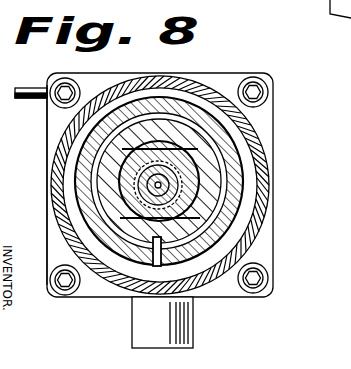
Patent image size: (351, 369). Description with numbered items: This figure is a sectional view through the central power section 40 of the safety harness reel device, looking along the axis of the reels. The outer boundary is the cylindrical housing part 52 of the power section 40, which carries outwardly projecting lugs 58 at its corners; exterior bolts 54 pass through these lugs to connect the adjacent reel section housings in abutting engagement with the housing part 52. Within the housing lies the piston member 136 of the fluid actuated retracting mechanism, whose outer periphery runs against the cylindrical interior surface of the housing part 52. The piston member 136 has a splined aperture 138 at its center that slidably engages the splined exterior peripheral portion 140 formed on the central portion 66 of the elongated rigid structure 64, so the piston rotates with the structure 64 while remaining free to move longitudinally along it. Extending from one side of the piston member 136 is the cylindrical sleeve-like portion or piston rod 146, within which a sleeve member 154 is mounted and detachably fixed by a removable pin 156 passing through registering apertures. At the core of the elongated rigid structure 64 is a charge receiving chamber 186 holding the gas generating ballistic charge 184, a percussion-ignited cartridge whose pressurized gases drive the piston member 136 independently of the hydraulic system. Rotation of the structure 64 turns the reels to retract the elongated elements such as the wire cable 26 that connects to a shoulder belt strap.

The elongated element 26 is at (30, 88).
The central power section 40 is at (183, 77).
The cylindrical housing part 52 is at (100, 185).
The exterior bolts 54 is at (262, 92).
The outwardly projecting lug 58 is at (46, 119).
The elongated rigid structure 64 is at (210, 168).
The central portion 66 is at (242, 205).
The piston member 136 is at (230, 242).
The splined aperture 138 is at (122, 150).
The splined exterior peripheral portion 140 is at (198, 178).
The cylindrical sleeve-like portion or piston rod 146 is at (220, 134).
The sleeve member 154 is at (113, 266).
The removable pin 156 is at (196, 299).
The gas generating ballistic charge 184 is at (133, 195).
The charge receiving chamber 186 is at (157, 160).